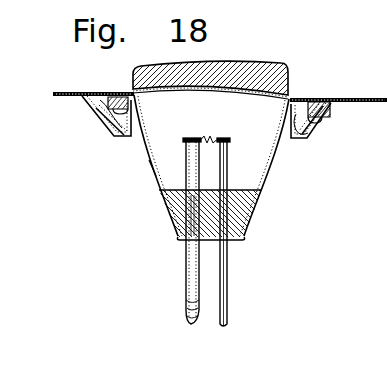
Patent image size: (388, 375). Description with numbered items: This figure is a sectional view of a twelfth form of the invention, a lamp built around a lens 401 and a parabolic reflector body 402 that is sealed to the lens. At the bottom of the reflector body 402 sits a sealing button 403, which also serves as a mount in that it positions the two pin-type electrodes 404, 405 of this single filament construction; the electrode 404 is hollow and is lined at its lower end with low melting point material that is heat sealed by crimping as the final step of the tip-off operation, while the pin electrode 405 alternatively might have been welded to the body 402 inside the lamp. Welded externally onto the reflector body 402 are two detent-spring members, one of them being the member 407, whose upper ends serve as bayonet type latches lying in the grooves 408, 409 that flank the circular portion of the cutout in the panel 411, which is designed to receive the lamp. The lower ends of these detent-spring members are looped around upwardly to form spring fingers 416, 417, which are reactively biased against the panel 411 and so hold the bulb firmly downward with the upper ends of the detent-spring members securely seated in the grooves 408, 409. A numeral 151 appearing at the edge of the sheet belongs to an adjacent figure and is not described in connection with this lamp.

The lens 401 is at (270, 66).
The parabolic reflector body 402 is at (147, 167).
The sealing button 403 is at (240, 226).
The electrode 404 is at (182, 250).
The pin electrode 405 is at (228, 290).
The detent-spring member 407 is at (311, 142).
The groove 408 is at (111, 96).
The groove 409 is at (307, 98).
The panel 411 is at (66, 92).
The spring finger 416 is at (95, 112).
The spring finger 417 is at (328, 115).
The adjacent figure numeral 151 is at (387, 256).